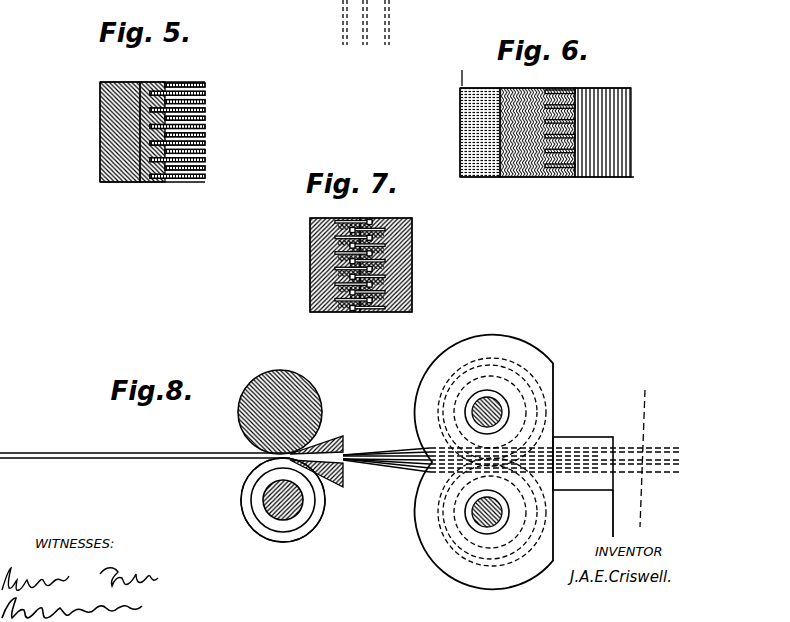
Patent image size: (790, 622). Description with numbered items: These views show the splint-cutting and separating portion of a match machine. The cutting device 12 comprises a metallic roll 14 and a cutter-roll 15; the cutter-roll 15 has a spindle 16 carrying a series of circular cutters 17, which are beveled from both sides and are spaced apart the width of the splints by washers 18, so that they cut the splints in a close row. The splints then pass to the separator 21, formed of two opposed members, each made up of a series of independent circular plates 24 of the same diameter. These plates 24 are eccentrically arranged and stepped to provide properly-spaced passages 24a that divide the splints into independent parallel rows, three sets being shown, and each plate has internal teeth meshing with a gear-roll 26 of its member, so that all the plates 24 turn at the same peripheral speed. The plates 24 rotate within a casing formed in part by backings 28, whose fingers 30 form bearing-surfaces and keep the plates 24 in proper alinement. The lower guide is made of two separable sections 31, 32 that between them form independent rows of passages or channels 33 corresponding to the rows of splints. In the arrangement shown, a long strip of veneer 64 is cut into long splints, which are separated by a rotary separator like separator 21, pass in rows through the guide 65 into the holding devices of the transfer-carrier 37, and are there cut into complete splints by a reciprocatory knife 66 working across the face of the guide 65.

In FIG. 8, the cutting device 12 is at (280, 401).
In FIG. 8, the metallic roll 14 is at (311, 388).
In FIG. 8, the cutter-roll 15 is at (267, 500).
In FIG. 8, the spindle 16 is at (300, 508).
In FIG. 8, the circular cutters 17 is at (262, 532).
In FIG. 8, the washers 18 is at (297, 532).
In FIG. 8, the separator 21 is at (484, 450).
In FIG. 5, the circular plates 24 is at (192, 96).
In FIG. 6, the circular plates 24 is at (543, 172).
In FIG. 8, the circular plates 24 is at (557, 372).
In FIG. 6, the passages 24a is at (506, 92).
In FIG. 6, the gear-roll 26 is at (621, 90).
In FIG. 8, the gear-roll 26 is at (474, 413).
In FIG. 5, the backings 28 is at (100, 86).
In FIG. 5, the fingers 30 is at (122, 121).
In FIG. 7, the guide section 31 is at (313, 265).
In FIG. 7, the guide section 32 is at (380, 265).
In FIG. 7, the passages or channels 33 is at (362, 222).
In FIG. 8, the transfer-carrier 37 is at (646, 425).
In FIG. 8, the strip of veneer 64 is at (136, 455).
In FIG. 8, the guide 65 is at (590, 437).
In FIG. 8, the reciprocatory knife 66 is at (612, 518).